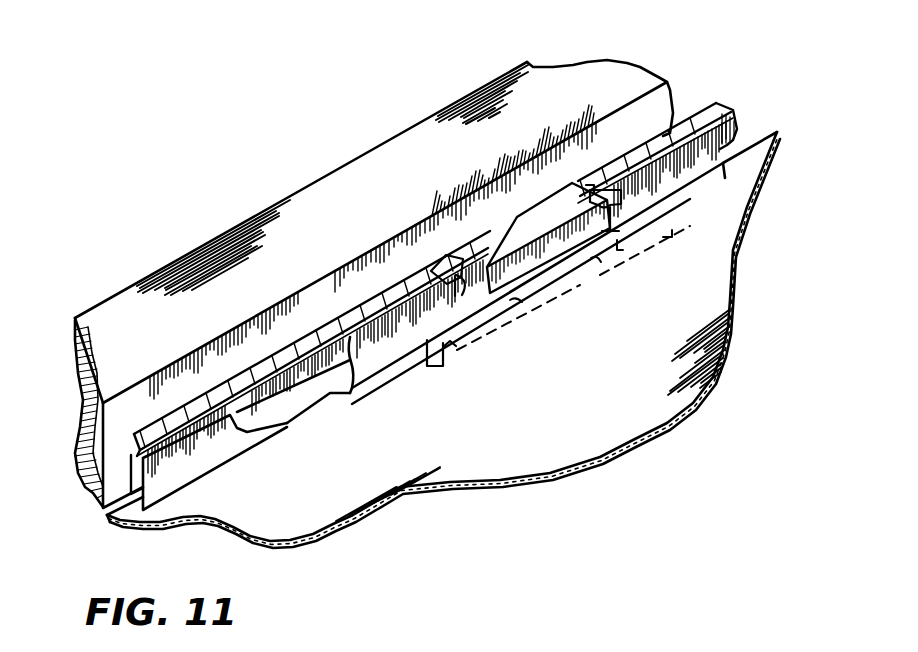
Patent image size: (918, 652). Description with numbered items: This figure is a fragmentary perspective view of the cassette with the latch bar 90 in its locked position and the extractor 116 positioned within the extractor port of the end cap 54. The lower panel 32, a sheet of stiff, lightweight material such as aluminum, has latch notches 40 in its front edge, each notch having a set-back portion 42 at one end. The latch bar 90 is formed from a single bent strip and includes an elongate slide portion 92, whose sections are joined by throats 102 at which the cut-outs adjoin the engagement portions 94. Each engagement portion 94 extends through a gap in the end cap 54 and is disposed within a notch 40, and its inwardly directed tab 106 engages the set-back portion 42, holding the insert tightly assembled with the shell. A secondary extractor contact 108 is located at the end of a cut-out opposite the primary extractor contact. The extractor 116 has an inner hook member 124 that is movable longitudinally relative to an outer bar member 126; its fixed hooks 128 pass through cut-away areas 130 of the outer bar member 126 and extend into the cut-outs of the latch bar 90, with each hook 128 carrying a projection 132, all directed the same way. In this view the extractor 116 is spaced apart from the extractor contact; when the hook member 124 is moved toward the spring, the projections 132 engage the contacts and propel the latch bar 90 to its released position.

The extractor 116 is at (310, 164).
The outer bar member 126 is at (102, 308).
The inner hook member 124 is at (86, 466).
The end cap 54 is at (318, 334).
The latch bar 90 is at (234, 447).
The latch notch 40 is at (360, 393).
The set-back portion 42 is at (670, 212).
The hook 128 is at (523, 224).
The secondary extractor contact 108 is at (612, 206).
The cut-away area 130 is at (452, 266).
The slide portion 92 is at (393, 298).
The engagement portion 94 is at (452, 355).
The projection 132 is at (518, 303).
The throat 102 is at (598, 262).
The tab 106 is at (653, 238).
The lower panel 32 is at (563, 437).